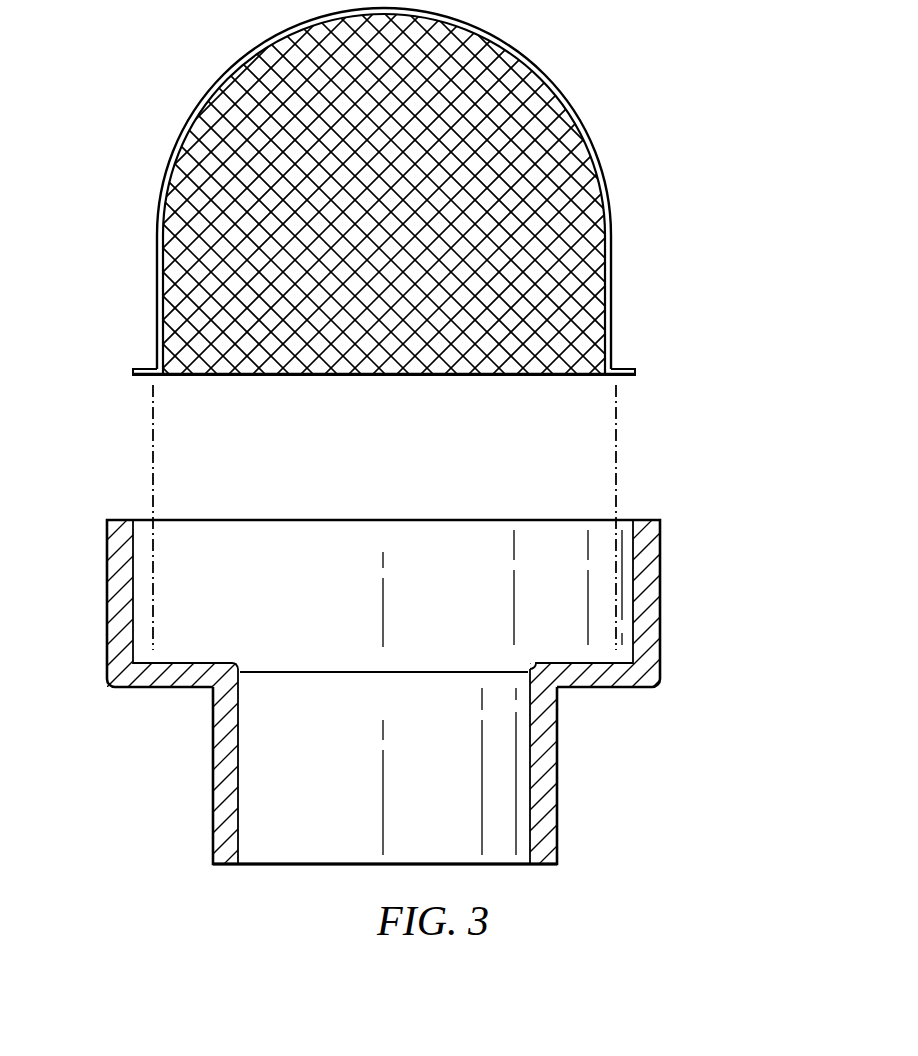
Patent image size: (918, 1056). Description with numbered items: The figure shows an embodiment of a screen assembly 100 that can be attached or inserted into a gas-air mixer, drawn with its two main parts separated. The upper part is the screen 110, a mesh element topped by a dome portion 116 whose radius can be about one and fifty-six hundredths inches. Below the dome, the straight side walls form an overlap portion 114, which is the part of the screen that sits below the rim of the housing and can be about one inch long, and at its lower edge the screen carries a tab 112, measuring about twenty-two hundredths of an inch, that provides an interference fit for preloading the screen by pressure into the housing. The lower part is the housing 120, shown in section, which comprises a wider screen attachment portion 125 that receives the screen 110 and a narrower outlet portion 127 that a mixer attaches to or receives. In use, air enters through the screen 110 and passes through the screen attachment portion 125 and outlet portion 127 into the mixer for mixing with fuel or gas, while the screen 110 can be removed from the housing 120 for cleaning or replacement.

The screen assembly 100 is at (718, 12).
The screen 110 is at (626, 97).
The tab 112 is at (133, 376).
The overlap portion 114 is at (157, 275).
The dome portion 116 is at (246, 63).
The housing 120 is at (648, 769).
The screen attachment portion 125 is at (107, 572).
The outlet portion 127 is at (213, 775).